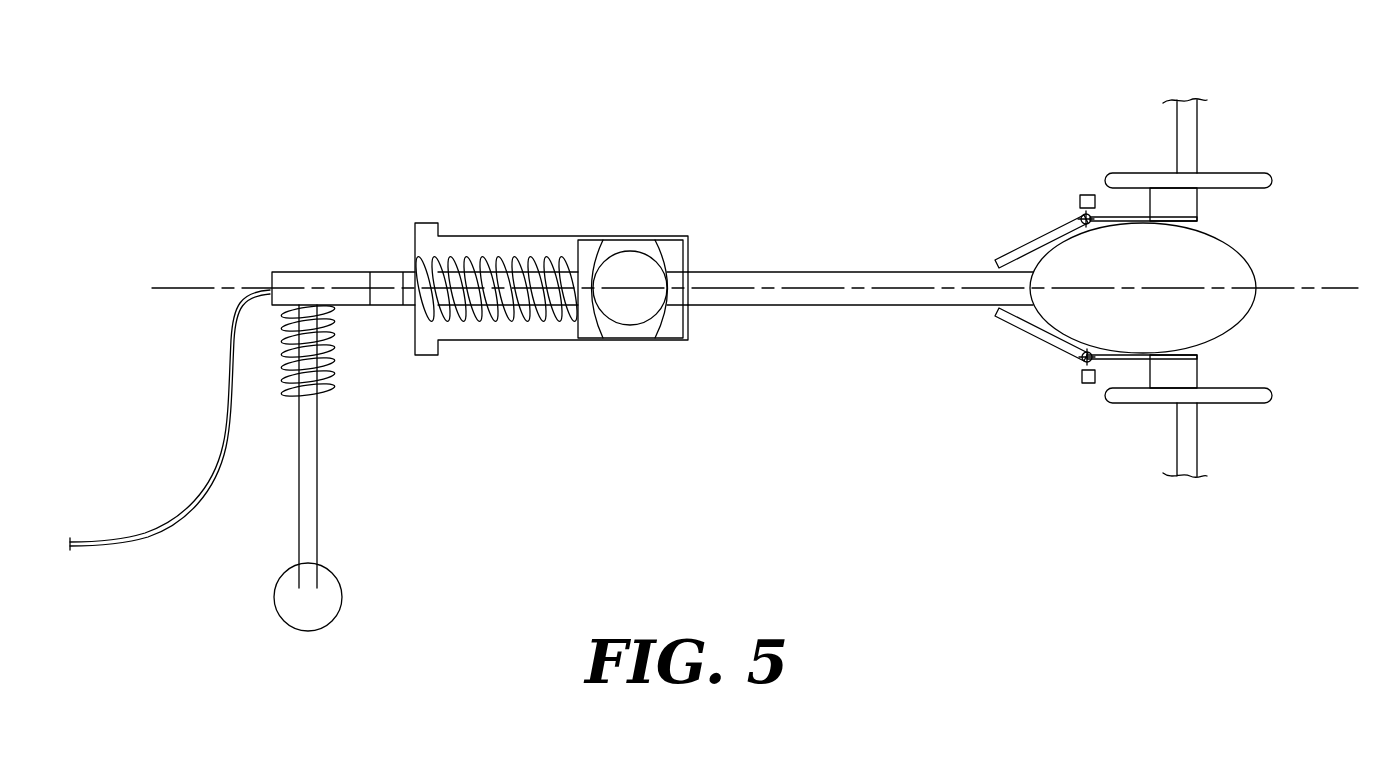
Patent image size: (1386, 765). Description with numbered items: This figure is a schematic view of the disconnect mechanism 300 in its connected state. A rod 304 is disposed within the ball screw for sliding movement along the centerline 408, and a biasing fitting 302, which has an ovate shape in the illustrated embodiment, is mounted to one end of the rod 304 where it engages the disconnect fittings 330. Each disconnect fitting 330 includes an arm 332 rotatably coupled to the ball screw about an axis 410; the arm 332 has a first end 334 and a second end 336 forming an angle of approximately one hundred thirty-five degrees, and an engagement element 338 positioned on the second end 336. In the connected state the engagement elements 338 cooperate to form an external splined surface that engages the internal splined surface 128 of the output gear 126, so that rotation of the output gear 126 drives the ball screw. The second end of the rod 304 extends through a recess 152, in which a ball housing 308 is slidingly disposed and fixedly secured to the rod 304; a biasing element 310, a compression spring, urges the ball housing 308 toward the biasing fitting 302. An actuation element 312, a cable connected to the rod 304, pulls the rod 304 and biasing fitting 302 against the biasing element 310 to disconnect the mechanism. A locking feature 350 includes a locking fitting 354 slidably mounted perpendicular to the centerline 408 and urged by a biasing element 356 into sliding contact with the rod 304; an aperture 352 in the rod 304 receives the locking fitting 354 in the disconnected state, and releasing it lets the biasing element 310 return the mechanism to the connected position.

The output gear 126 is at (1190, 114).
The internal splined surface 128 is at (1229, 178).
The recess 152 is at (512, 334).
The disconnect mechanism 300 is at (859, 232).
The biasing fitting 302 is at (1244, 251).
The rod 304 is at (920, 272).
The ball housing 308 is at (578, 240).
The biasing element 310 is at (492, 260).
The actuation element 312 is at (143, 533).
The disconnect fitting 330 is at (1027, 355).
The arm 332 is at (1057, 352).
The first end 334 is at (1010, 328).
The second end 336 is at (1118, 359).
The engagement element 338 is at (1193, 203).
The locking feature 350 is at (380, 351).
The aperture 352 is at (371, 272).
The locking fitting 354 is at (312, 493).
The biasing element 356 is at (333, 353).
The centerline 408 is at (1336, 288).
The axis 410 is at (1084, 216).